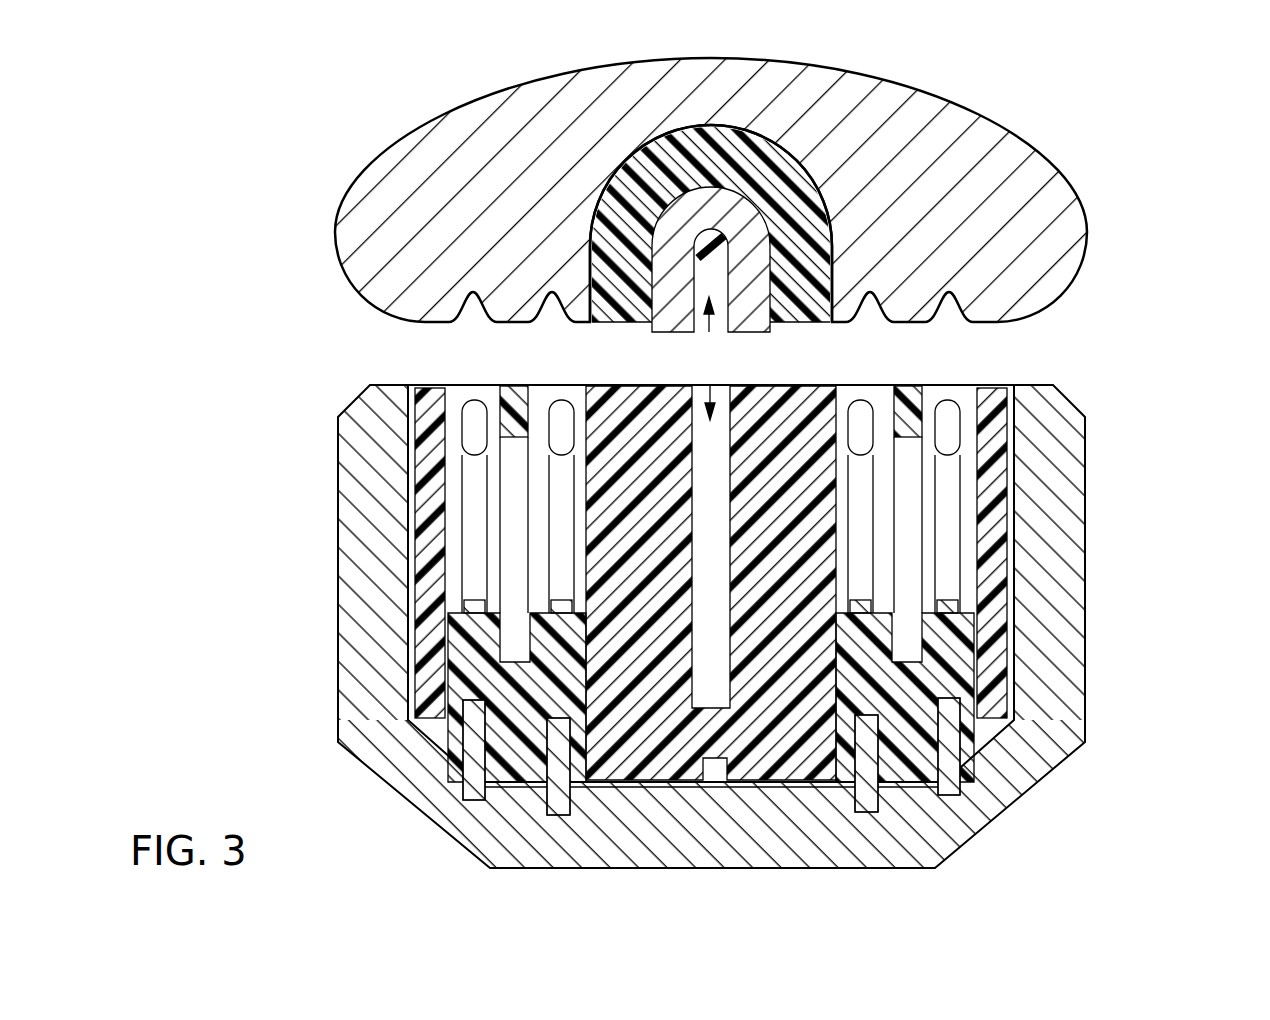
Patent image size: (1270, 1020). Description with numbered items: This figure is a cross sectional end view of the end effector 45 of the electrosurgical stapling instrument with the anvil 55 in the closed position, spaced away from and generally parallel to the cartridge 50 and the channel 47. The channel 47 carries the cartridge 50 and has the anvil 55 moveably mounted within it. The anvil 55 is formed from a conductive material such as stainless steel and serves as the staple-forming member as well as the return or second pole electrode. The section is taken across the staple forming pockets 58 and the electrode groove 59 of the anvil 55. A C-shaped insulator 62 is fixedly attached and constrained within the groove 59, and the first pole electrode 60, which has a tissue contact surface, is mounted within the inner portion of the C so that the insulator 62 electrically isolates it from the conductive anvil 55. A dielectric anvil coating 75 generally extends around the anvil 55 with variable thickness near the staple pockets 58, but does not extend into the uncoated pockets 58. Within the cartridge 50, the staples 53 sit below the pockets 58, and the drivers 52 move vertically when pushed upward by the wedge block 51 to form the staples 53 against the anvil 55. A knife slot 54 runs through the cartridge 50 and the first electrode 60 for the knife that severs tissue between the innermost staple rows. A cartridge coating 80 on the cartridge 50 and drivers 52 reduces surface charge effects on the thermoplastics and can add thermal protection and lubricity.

The end effector 45 is at (1125, 306).
The channel 47 is at (1103, 712).
The cartridge 50 is at (512, 390).
The wedge block 51 is at (560, 797).
The drivers 52 is at (465, 677).
The staples 53 is at (552, 527).
The knife slot 54 is at (709, 332).
The anvil 55 is at (1056, 142).
The staple forming pockets 58 is at (471, 300).
The groove 59 is at (792, 152).
The first pole electrode 60 is at (752, 322).
The insulator 62 is at (616, 196).
The anvil coating 75 is at (392, 140).
The cartridge coating 80 is at (455, 396).